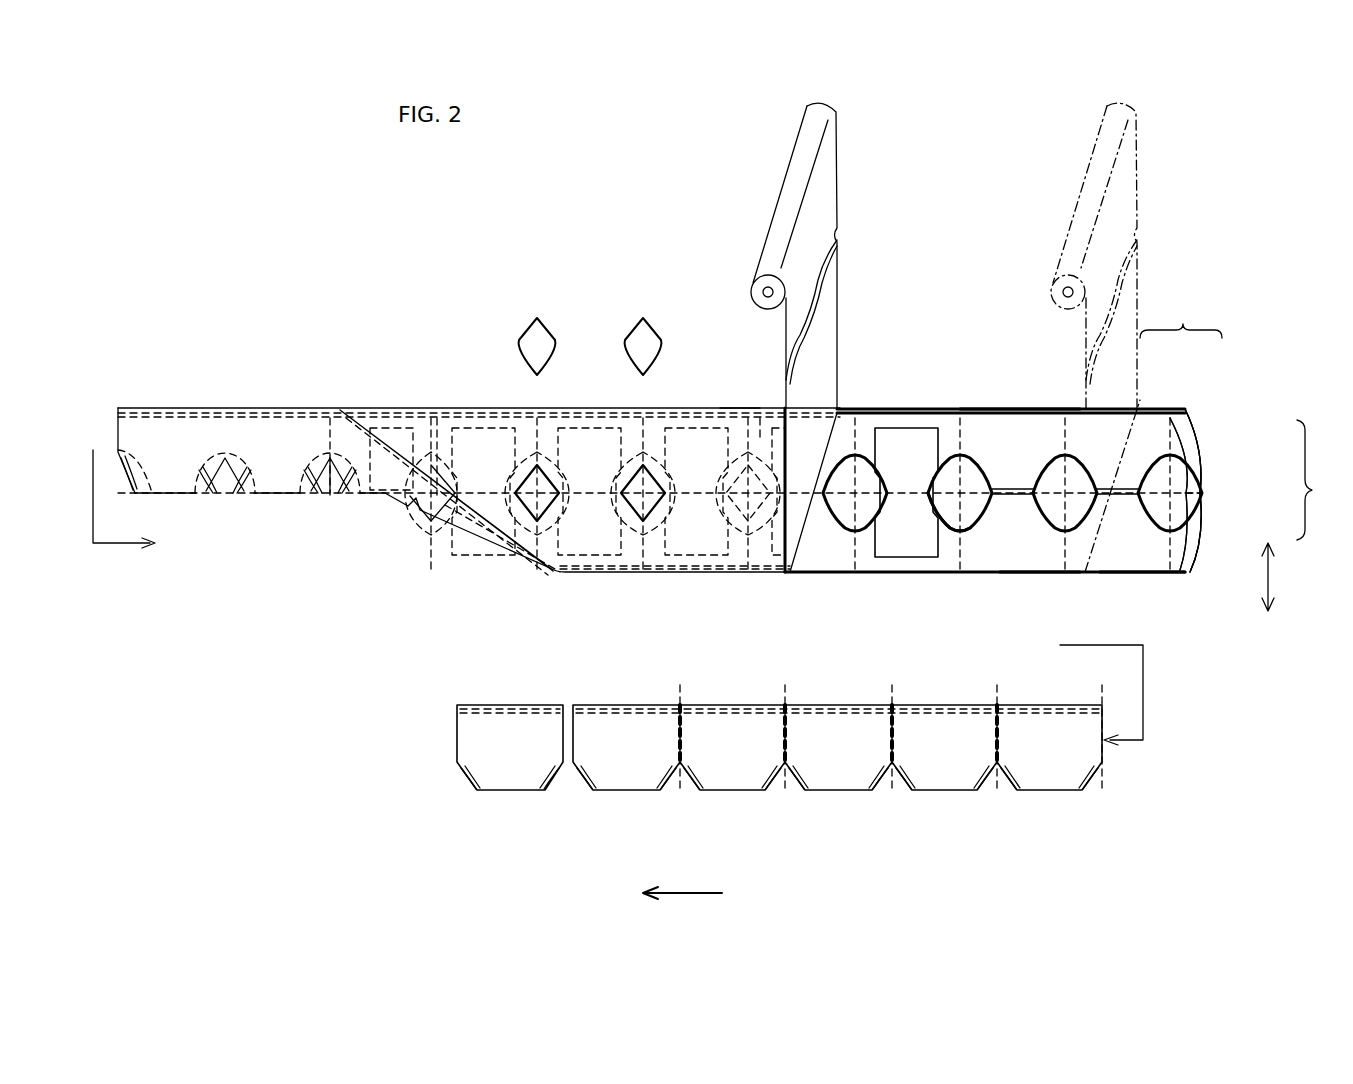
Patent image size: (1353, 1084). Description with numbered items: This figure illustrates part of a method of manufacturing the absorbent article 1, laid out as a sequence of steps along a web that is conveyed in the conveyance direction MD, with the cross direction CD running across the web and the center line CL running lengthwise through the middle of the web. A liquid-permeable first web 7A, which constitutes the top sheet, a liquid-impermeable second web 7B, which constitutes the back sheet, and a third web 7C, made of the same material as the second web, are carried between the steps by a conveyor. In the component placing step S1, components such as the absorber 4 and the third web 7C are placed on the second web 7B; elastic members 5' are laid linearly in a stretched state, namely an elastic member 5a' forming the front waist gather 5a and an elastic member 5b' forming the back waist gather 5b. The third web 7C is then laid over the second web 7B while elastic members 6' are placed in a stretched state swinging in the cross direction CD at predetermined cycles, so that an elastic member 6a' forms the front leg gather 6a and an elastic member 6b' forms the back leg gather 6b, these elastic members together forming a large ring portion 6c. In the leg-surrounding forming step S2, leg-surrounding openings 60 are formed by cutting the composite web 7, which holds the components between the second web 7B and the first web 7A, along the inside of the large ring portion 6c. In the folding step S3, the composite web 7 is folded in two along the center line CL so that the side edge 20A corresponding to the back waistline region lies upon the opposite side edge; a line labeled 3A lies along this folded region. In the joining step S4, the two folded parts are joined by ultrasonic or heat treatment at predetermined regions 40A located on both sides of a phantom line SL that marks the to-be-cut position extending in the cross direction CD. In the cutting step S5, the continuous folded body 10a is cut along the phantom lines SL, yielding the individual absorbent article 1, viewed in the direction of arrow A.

The absorbent article 1 is at (512, 705).
The folding line 3A is at (1118, 434).
The absorber 4 is at (912, 412).
The front waist gather 5a is at (1020, 377).
The back waist gather 5b is at (1040, 605).
The elastic member 5a' is at (1237, 451).
The elastic member 5b' is at (1241, 532).
The elastic members 5' is at (1315, 480).
The elastic members 6' is at (1181, 318).
The front leg gather 6a is at (765, 401).
The back leg gather 6b is at (959, 537).
The elastic member 6a' is at (1198, 457).
The elastic member 6b' is at (1164, 456).
The large ring portion 6c is at (976, 541).
The composite web 7 is at (740, 408).
The liquid-permeable first web 7A is at (838, 363).
The liquid-impermeable second web 7B is at (1155, 560).
The third web 7C is at (1130, 205).
The continuous body of articles 10a is at (610, 575).
The side edge 20A is at (598, 408).
The predetermined regions 40A is at (820, 712).
The leg-surrounding openings 60 is at (530, 468).
The arrow A is at (93, 513).
The center line CL is at (1200, 493).
The phantom line SL is at (330, 495).
The cross direction CD is at (1285, 577).
The conveyance direction MD is at (682, 882).
The component placing step S1 is at (1006, 273).
The leg-surrounding forming step S2 is at (607, 303).
The folding step S3 is at (414, 334).
The joining step S4 is at (876, 822).
The cutting step S5 is at (576, 826).